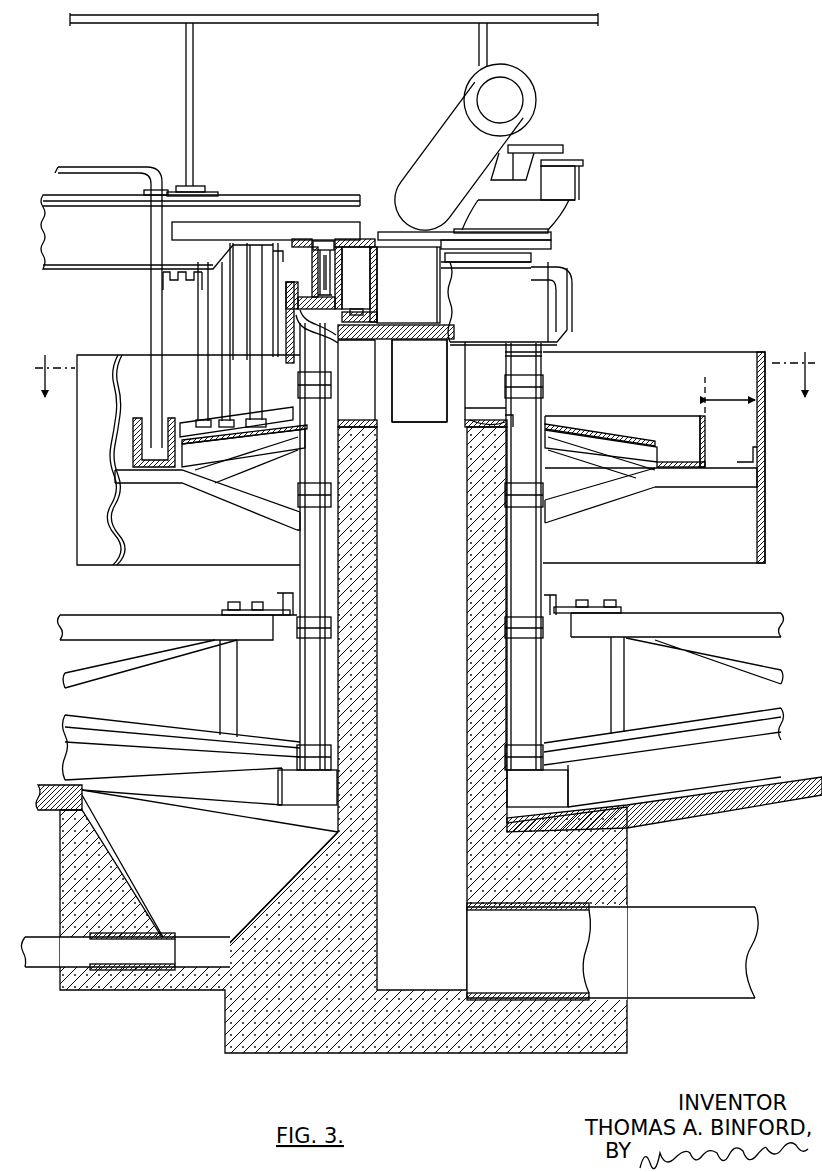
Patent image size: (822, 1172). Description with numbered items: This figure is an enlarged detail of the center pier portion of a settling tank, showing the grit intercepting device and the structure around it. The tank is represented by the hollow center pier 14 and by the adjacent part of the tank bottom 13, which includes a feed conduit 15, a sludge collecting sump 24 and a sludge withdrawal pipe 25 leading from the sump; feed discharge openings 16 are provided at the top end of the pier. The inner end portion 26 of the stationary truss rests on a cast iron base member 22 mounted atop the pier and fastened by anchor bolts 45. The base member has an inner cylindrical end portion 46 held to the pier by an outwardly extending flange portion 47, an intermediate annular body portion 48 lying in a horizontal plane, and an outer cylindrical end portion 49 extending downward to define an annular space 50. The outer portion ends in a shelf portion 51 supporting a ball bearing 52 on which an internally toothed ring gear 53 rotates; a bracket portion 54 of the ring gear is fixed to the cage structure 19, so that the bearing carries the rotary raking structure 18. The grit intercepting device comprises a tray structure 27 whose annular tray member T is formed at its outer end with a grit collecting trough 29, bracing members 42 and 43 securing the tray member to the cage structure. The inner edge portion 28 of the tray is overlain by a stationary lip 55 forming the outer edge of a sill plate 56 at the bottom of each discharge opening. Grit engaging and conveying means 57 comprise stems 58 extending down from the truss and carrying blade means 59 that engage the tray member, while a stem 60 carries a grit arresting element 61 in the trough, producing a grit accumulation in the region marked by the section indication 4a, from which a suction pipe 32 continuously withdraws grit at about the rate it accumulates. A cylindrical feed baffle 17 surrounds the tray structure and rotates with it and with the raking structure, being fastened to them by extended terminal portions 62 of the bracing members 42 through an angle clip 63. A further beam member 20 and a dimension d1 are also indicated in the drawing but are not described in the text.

The tank bottom 13 is at (679, 806).
The hollow center pier 14 is at (488, 713).
The feed conduit 15 is at (712, 906).
The feed discharge openings 16 is at (375, 387).
The cylindrical feed baffle 17 is at (764, 427).
The rotary raking structure 18 is at (289, 591).
The cage structure 19 is at (541, 553).
The beam 20 is at (172, 609).
The cast iron base member 22 is at (382, 236).
The sediment or sludge collecting sump 24 is at (133, 876).
The sludge withdrawal pipe 25 is at (75, 955).
The inner end portion of truss 26 is at (108, 262).
The tray structure 27 is at (626, 426).
The inner edge portion of tray member 28 is at (546, 430).
The grit collecting trough 29 is at (706, 451).
The suction pipe 32 is at (150, 168).
The bracing member 42 is at (605, 486).
The bracing member 43 is at (598, 471).
The anchor bolts 45 is at (375, 298).
The inner cylindrical end portion 46 is at (378, 308).
The outwardly extending flange portion 47 is at (385, 334).
The intermediate annular body portion 48 is at (340, 246).
The outer cylindrical end portion 49 is at (340, 296).
The annular space 50 is at (360, 289).
The annular outwardly extending shelf portion 51 is at (340, 337).
The annular vertical thrust bearing 52 is at (285, 300).
The internally toothed ring gear 53 is at (322, 248).
The bracket portion 54 is at (287, 322).
The stationary lip 55 is at (512, 418).
The sill member 56 is at (432, 420).
The grit engaging and conveying means 57 is at (191, 359).
The stems 58 is at (203, 336).
The blade means 59 is at (195, 437).
The stem 60 is at (178, 381).
The grit arresting element 61 is at (143, 433).
The extended terminal portions 62 is at (700, 483).
The angle clip 63 is at (762, 461).
The section line 4a is at (428, 393).
The annular tray member T is at (606, 435).
The dimension d1 is at (730, 397).